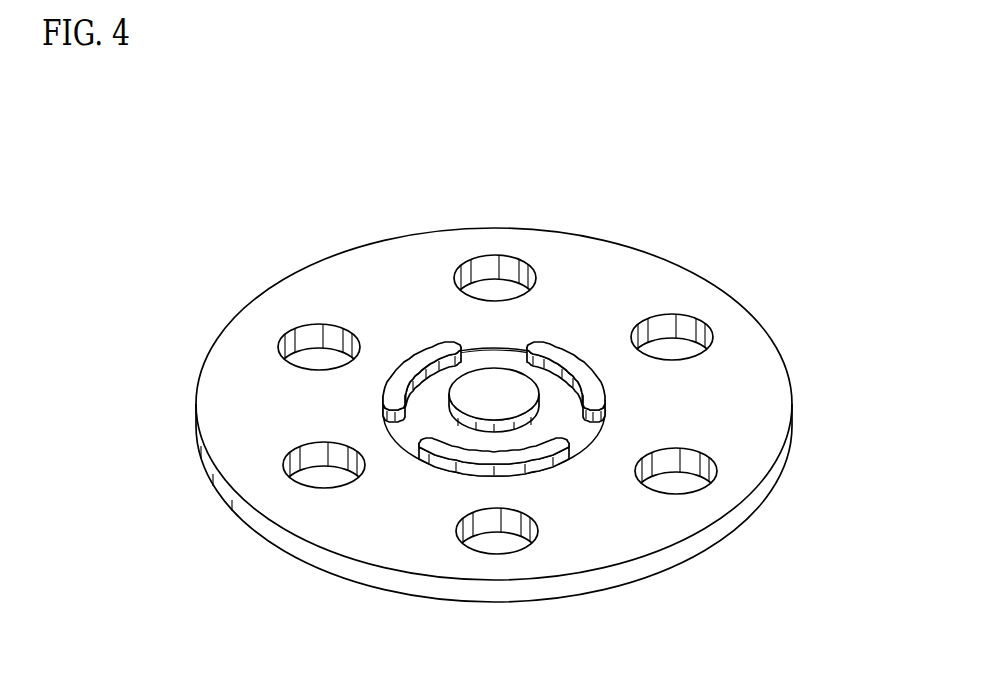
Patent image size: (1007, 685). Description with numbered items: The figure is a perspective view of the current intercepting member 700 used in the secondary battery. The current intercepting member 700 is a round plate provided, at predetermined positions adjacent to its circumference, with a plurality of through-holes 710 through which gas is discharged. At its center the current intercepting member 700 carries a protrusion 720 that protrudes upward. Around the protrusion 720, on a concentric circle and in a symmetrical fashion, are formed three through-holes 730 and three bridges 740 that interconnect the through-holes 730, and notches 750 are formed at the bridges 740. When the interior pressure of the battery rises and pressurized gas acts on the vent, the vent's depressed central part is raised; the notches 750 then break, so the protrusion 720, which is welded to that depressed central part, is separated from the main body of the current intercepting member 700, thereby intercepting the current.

The current intercepting member 700 is at (240, 323).
The through-holes 710 is at (505, 257).
The protrusion 720 is at (517, 373).
The through-holes 730 is at (555, 462).
The bridges 740 is at (356, 424).
The notches 750 is at (431, 457).